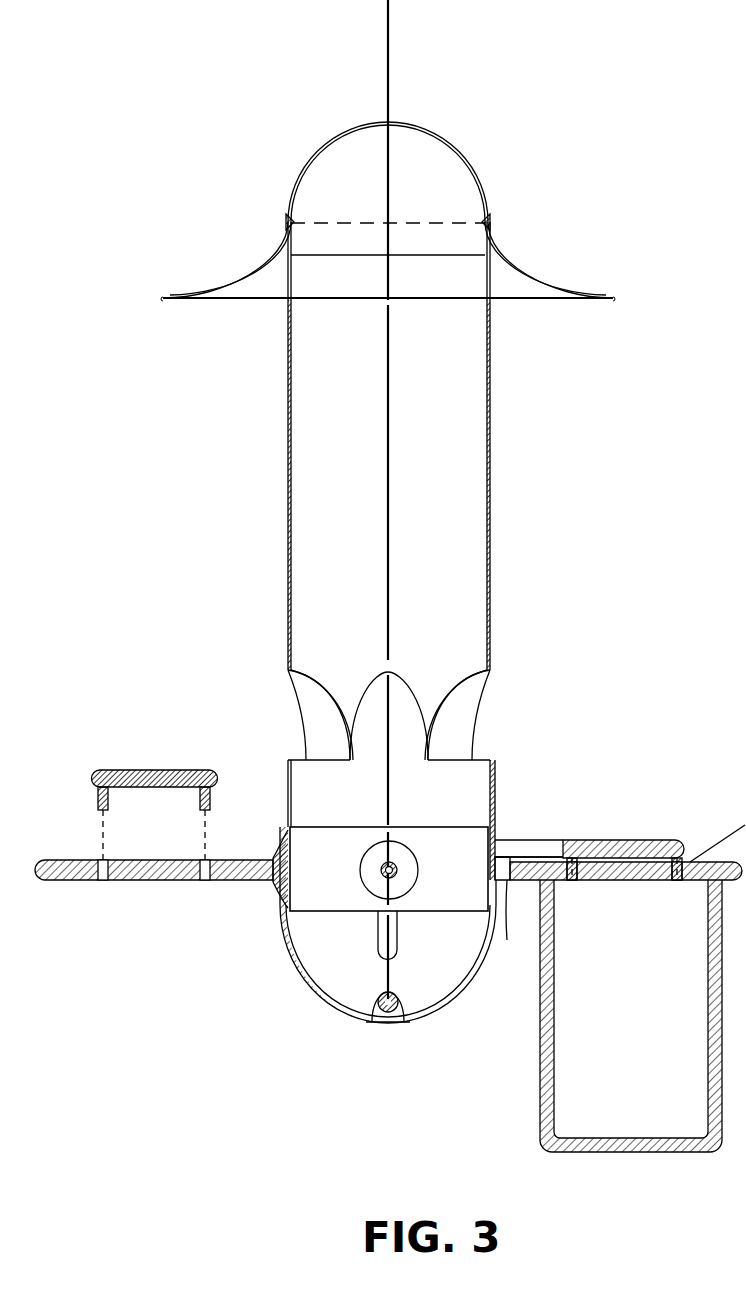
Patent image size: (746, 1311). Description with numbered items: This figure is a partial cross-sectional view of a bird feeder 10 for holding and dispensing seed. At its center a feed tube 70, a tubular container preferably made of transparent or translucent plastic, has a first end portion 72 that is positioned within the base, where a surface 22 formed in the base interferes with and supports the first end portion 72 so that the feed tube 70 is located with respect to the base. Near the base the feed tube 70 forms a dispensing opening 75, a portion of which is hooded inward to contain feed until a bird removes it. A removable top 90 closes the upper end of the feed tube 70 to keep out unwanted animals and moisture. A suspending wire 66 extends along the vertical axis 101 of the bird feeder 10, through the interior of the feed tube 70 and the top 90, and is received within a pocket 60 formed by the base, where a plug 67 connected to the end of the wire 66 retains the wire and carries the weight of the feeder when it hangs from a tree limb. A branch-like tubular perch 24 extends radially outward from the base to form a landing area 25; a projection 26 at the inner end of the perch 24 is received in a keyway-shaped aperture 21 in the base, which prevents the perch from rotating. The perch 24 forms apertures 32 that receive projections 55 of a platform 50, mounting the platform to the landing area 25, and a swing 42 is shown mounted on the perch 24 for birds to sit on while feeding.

The bird feeder 10 is at (600, 540).
The aperture 21 is at (397, 868).
The surface 22 is at (285, 930).
The perch 24 is at (152, 876).
The landing area 25 is at (646, 770).
The projection 26 is at (272, 862).
The apertures 32 is at (103, 862).
The swing 42 is at (548, 1040).
The platform 50 is at (135, 775).
The projections 55 is at (98, 803).
The pocket 60 is at (400, 1020).
The suspending wire 66 is at (388, 102).
The plug 67 is at (365, 1020).
The feed tube 70 is at (478, 450).
The first end portion 72 is at (500, 862).
The dispensing opening 75 is at (462, 730).
The top 90 is at (485, 213).
The vertical axis 101 is at (397, 58).